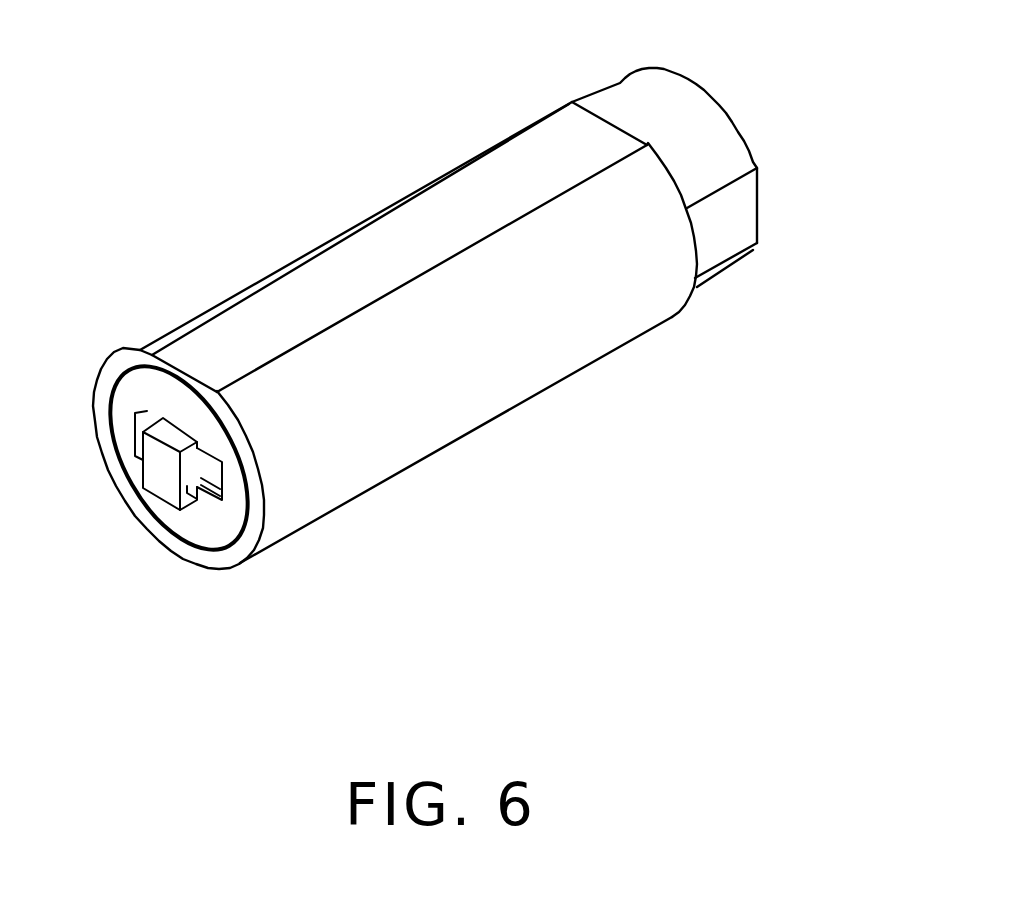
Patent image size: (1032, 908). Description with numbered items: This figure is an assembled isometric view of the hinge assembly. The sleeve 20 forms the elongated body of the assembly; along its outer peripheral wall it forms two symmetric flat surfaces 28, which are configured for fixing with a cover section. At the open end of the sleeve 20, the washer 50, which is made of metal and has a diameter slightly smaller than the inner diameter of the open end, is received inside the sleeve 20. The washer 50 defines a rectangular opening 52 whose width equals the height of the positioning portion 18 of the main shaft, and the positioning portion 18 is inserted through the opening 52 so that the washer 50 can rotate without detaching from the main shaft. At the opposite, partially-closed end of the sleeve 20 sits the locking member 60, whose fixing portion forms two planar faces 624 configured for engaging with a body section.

The positioning portion 18 is at (152, 473).
The sleeve 20 is at (582, 330).
The flat surface 28 is at (392, 235).
The washer 50 is at (233, 513).
The rectangular opening 52 is at (210, 497).
The locking member 60 is at (627, 105).
The planar face 624 is at (735, 222).